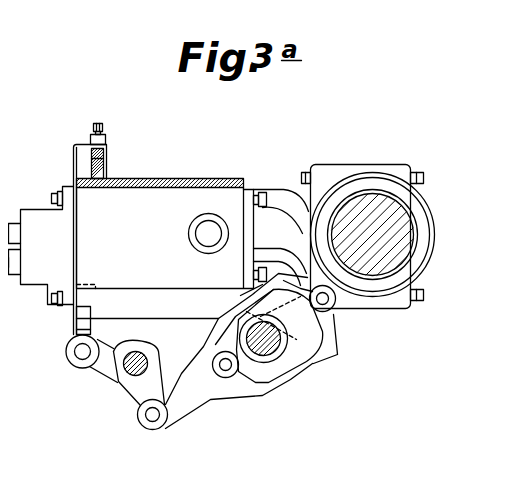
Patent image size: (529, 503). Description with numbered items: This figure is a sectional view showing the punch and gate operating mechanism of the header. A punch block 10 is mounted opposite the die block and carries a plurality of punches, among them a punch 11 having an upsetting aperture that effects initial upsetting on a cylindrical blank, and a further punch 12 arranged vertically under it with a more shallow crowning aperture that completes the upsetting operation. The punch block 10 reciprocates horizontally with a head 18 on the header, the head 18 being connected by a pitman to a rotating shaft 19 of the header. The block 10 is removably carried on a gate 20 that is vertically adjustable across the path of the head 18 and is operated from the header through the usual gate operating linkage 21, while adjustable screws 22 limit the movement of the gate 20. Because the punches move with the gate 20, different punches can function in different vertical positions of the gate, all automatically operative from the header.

The punch block 10 is at (47, 278).
The punch 11 is at (12, 224).
The further punch 12 is at (15, 270).
The head 18 is at (125, 198).
The rotating shaft 19 is at (380, 203).
The gate 20 is at (82, 320).
The gate operating linkage 21 is at (183, 378).
The adjustable screws 22 is at (103, 161).